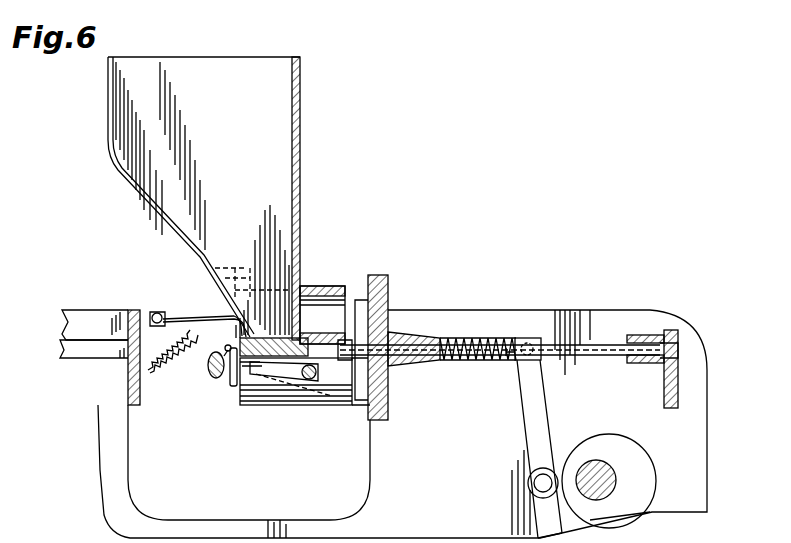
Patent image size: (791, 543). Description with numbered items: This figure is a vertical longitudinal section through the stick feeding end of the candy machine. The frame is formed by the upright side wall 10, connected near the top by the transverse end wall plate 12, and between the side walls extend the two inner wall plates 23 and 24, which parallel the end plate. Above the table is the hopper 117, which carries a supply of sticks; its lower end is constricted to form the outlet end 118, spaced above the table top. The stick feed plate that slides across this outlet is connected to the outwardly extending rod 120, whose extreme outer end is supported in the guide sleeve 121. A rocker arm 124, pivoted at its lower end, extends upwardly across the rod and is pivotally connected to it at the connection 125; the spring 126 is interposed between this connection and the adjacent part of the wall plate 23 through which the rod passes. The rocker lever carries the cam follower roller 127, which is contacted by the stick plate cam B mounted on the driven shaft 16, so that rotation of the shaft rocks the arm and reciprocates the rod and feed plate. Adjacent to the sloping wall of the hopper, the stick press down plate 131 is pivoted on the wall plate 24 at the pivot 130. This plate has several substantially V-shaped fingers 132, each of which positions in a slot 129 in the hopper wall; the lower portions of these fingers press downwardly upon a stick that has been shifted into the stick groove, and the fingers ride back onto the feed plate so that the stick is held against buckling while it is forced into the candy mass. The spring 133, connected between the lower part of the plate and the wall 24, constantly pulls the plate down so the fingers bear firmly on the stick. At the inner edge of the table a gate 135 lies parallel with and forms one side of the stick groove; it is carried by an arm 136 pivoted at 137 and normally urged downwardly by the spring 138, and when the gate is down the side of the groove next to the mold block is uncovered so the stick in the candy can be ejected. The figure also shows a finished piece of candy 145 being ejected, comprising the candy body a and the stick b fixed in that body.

The side wall 10 is at (698, 432).
The end wall plate 12 is at (678, 390).
The driven shaft 16 is at (600, 495).
The inner wall plate 23 is at (388, 280).
The inner wall plate 24 is at (133, 308).
The hopper 117 is at (300, 181).
The outlet end 118 is at (345, 345).
The rod 120 is at (470, 338).
The guide sleeve 121 is at (654, 333).
The rocker arm 124 is at (530, 430).
The pivotal connection 125 is at (534, 336).
The spring 126 is at (502, 361).
The cam follower roller 127 is at (305, 333).
The slot 129 is at (252, 305).
The pivot 130 is at (168, 296).
The stick press down plate 131 is at (202, 314).
The V-shaped finger 132 is at (252, 338).
The spring 133 is at (150, 364).
The gate 135 is at (233, 387).
The arm 136 is at (280, 368).
The pivot 137 is at (311, 380).
The spring 138 is at (258, 363).
The piece of candy 145 is at (206, 377).
The candy body a is at (208, 367).
The stick b is at (224, 347).
The stick plate cam B is at (640, 503).